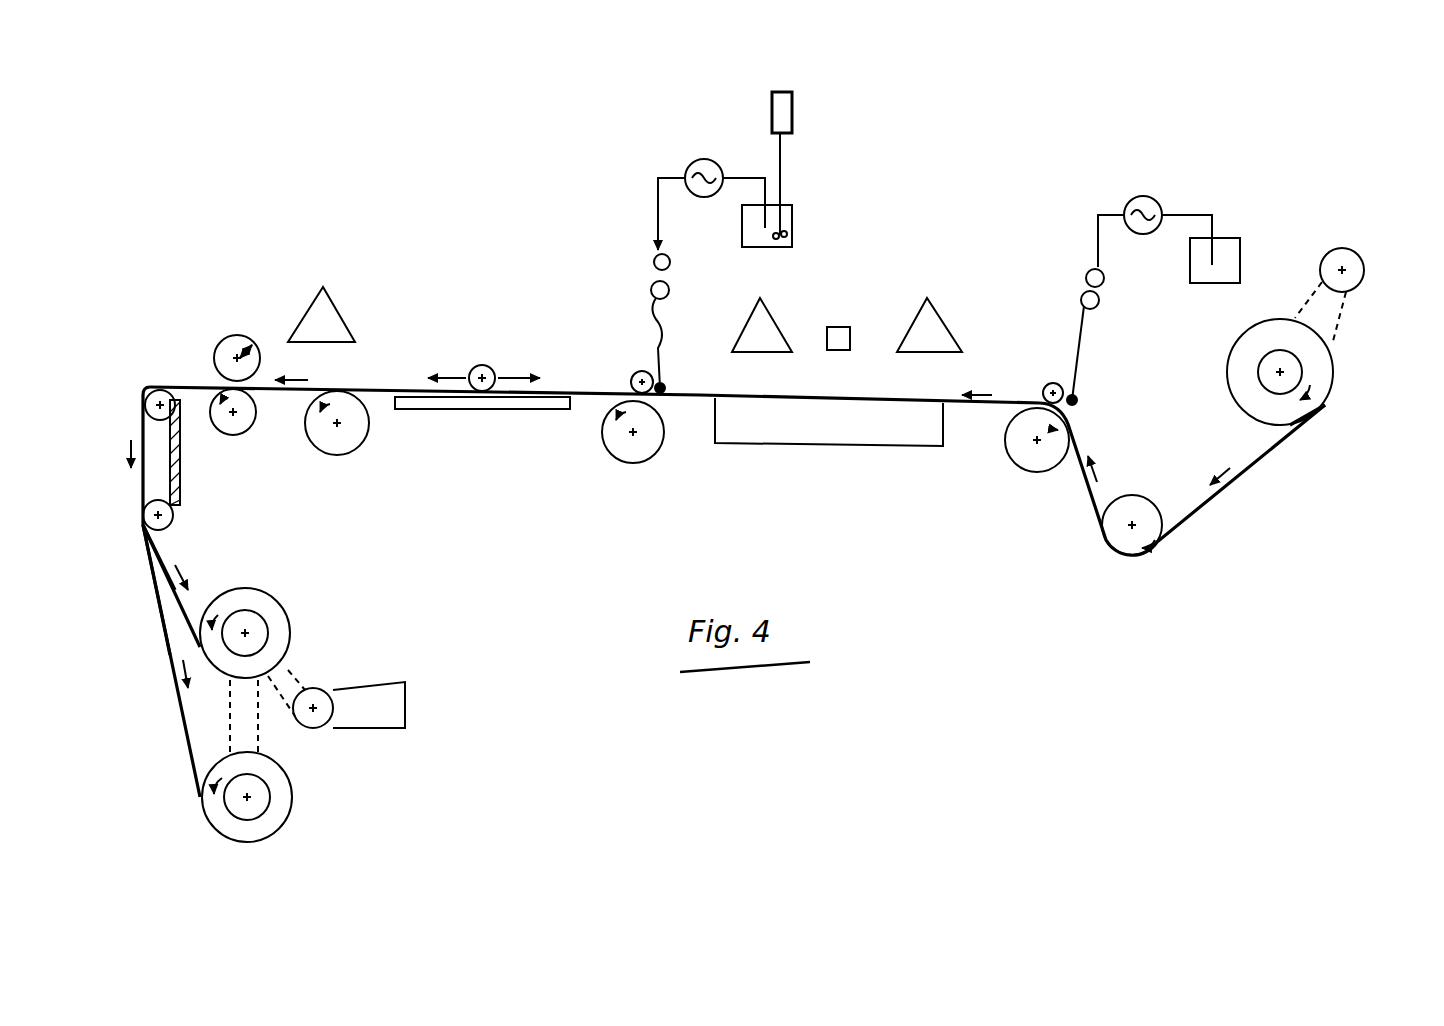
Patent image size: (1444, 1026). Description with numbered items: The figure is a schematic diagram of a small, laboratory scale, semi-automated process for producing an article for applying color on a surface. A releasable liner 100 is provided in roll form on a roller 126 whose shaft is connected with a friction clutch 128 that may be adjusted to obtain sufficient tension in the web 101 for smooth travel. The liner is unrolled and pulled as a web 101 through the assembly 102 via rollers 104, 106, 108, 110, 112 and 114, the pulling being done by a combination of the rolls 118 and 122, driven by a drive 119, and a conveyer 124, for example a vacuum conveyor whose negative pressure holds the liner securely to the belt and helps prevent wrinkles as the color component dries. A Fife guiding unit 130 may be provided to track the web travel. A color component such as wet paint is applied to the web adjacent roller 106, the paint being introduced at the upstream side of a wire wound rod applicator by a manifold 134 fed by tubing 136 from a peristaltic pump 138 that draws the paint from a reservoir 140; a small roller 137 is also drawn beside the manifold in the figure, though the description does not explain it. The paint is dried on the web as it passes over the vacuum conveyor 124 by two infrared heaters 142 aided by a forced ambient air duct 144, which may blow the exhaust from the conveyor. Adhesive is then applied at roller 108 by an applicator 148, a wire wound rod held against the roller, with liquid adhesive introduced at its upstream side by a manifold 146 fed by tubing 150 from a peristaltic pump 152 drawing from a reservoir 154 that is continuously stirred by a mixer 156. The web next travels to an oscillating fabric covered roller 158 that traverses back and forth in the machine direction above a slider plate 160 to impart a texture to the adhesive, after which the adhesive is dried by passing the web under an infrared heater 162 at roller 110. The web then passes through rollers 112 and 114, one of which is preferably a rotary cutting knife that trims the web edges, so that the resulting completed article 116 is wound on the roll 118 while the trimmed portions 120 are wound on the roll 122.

The releasable liner 100 is at (1330, 408).
The web 101 is at (183, 382).
The assembly 102 is at (958, 548).
The roller 104 is at (1138, 492).
The roller 106 is at (1014, 462).
The roller 108 is at (625, 466).
The roller 110 is at (338, 458).
The roller 112 is at (232, 442).
The roller 114 is at (220, 344).
The completed article 116 is at (175, 562).
The roll 118 is at (268, 620).
The drive 119 is at (380, 680).
The trimmed portions 120 is at (180, 722).
The roll 122 is at (270, 820).
The conveyer 124 is at (886, 452).
The roller 126 is at (1305, 368).
The friction clutch 128 is at (1382, 238).
The Fife guiding unit 130 is at (186, 494).
The manifold 134 is at (1082, 401).
The tubing 136 is at (1084, 350).
The roller 137 is at (1046, 384).
The peristaltic pump 138 is at (1150, 190).
The reservoir 140 is at (1245, 252).
The infrared heaters 142 is at (772, 320).
The forced ambient air duct 144 is at (838, 326).
The manifold 146 is at (666, 388).
The applicator 148 is at (640, 370).
The tubing 150 is at (664, 338).
The peristaltic pump 152 is at (700, 160).
The reservoir 154 is at (798, 222).
The mixer 156 is at (798, 115).
The oscillating fabric covered roller 158 is at (488, 358).
The slider plate 160 is at (458, 414).
The infrared heater 162 is at (340, 312).